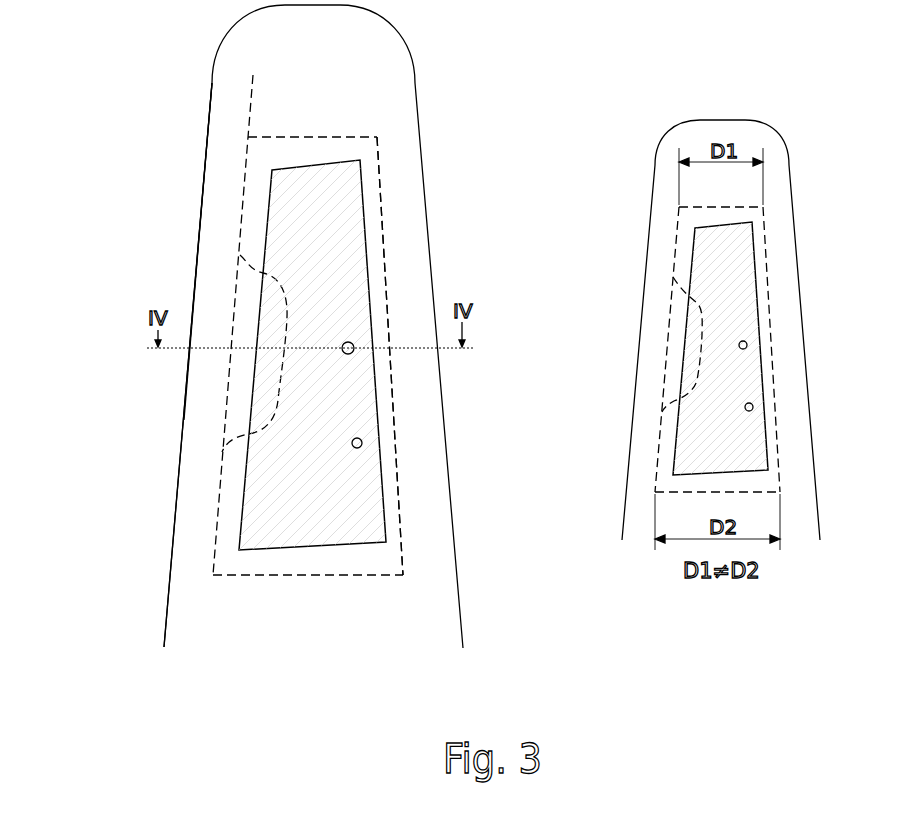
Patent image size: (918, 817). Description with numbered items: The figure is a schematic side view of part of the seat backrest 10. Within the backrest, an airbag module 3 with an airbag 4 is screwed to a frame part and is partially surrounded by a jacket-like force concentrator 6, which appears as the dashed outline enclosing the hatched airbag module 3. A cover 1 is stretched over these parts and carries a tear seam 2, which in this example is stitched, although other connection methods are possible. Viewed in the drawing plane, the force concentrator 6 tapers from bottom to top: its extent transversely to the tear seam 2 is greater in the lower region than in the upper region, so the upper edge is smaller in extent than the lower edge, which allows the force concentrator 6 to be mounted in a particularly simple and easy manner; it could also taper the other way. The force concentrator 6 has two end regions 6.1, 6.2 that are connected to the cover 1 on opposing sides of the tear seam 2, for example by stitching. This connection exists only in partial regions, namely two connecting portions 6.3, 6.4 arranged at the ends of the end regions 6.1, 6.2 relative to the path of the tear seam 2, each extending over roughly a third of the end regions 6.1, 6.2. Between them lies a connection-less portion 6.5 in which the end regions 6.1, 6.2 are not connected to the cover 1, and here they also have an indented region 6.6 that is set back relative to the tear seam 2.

The cover 1 is at (424, 233).
The tear seam 2 is at (244, 88).
The airbag module 3 is at (390, 267).
The airbag 4 is at (364, 402).
The force concentrator 6 is at (358, 137).
The end region 6.1 is at (409, 458).
The end region 6.2 is at (194, 290).
The connecting portion 6.3 is at (217, 196).
The connecting portion 6.4 is at (194, 529).
The connection-less portion 6.5 is at (205, 379).
The indented region 6.6 is at (256, 405).
The seat backrest 10 is at (468, 130).